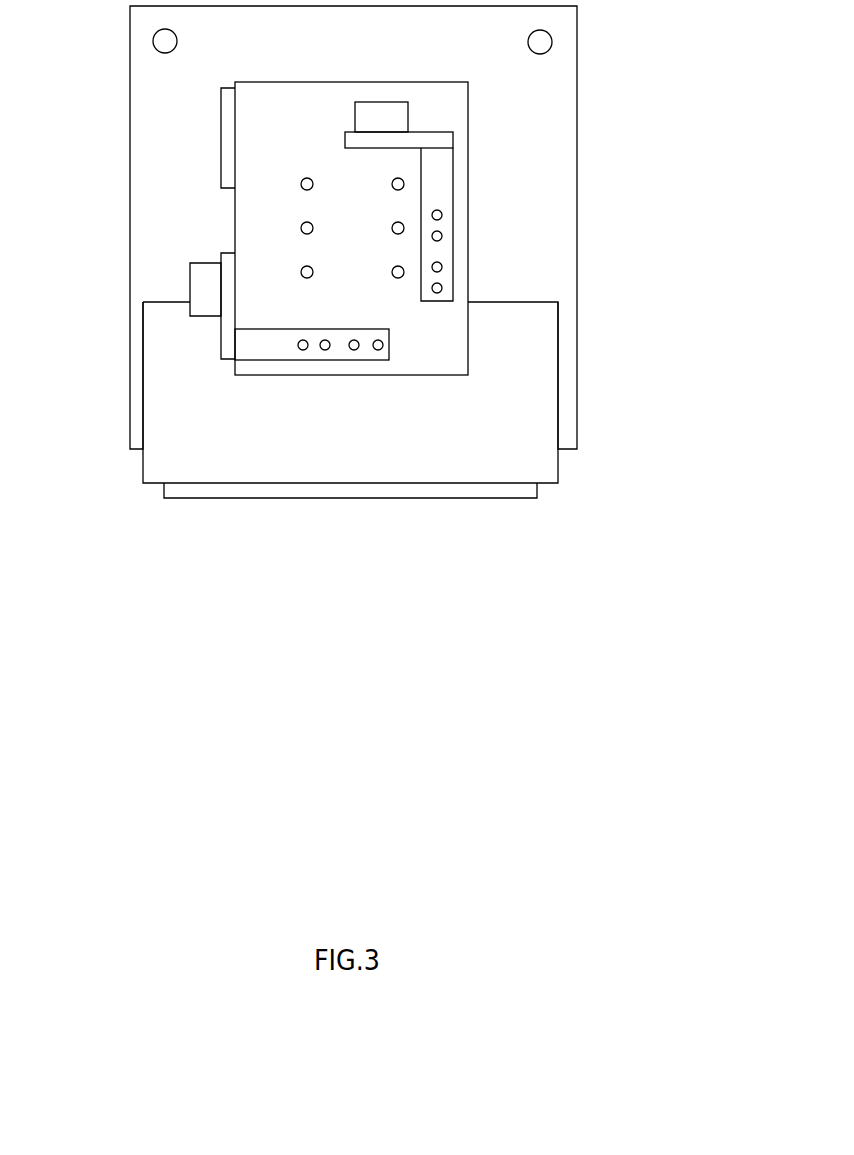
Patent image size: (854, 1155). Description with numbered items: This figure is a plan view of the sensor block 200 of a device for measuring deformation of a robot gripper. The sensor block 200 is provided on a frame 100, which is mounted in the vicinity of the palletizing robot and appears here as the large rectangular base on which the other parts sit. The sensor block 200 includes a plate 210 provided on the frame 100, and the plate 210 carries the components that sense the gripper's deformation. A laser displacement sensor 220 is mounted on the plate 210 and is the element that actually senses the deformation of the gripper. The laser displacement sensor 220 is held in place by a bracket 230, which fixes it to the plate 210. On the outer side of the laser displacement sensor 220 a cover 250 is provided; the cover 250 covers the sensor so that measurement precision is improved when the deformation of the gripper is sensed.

The frame 100 is at (130, 227).
The sensor block 200 is at (653, 88).
The plate 210 is at (462, 223).
The laser displacement sensor 220 is at (397, 119).
The bracket 230 is at (437, 177).
The cover 250 is at (347, 137).